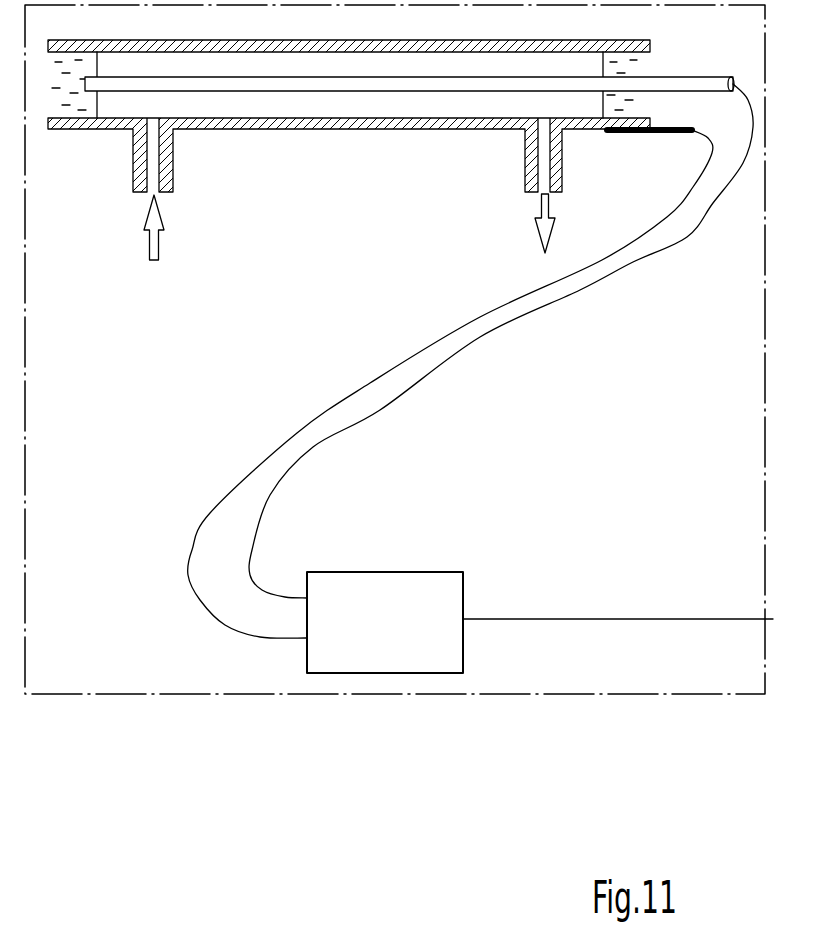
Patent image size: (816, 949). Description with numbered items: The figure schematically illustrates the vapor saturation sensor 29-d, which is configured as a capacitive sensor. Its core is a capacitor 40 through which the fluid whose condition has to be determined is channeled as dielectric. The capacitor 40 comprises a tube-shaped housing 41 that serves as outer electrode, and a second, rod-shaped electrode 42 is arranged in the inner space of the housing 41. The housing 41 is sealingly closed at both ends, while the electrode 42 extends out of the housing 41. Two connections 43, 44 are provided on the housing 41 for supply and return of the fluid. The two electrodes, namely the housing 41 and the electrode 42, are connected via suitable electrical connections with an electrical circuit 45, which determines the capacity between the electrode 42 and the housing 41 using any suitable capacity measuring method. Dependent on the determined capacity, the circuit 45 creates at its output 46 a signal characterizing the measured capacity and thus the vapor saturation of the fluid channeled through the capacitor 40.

The vapor saturation sensor 29-d is at (153, 728).
The capacitor 40 is at (391, 165).
The tube-shaped housing 41 is at (413, 130).
The electrode 42 is at (243, 82).
The connection 43 is at (136, 162).
The connection 44 is at (525, 163).
The electrical circuit 45 is at (363, 572).
The output 46 is at (575, 619).